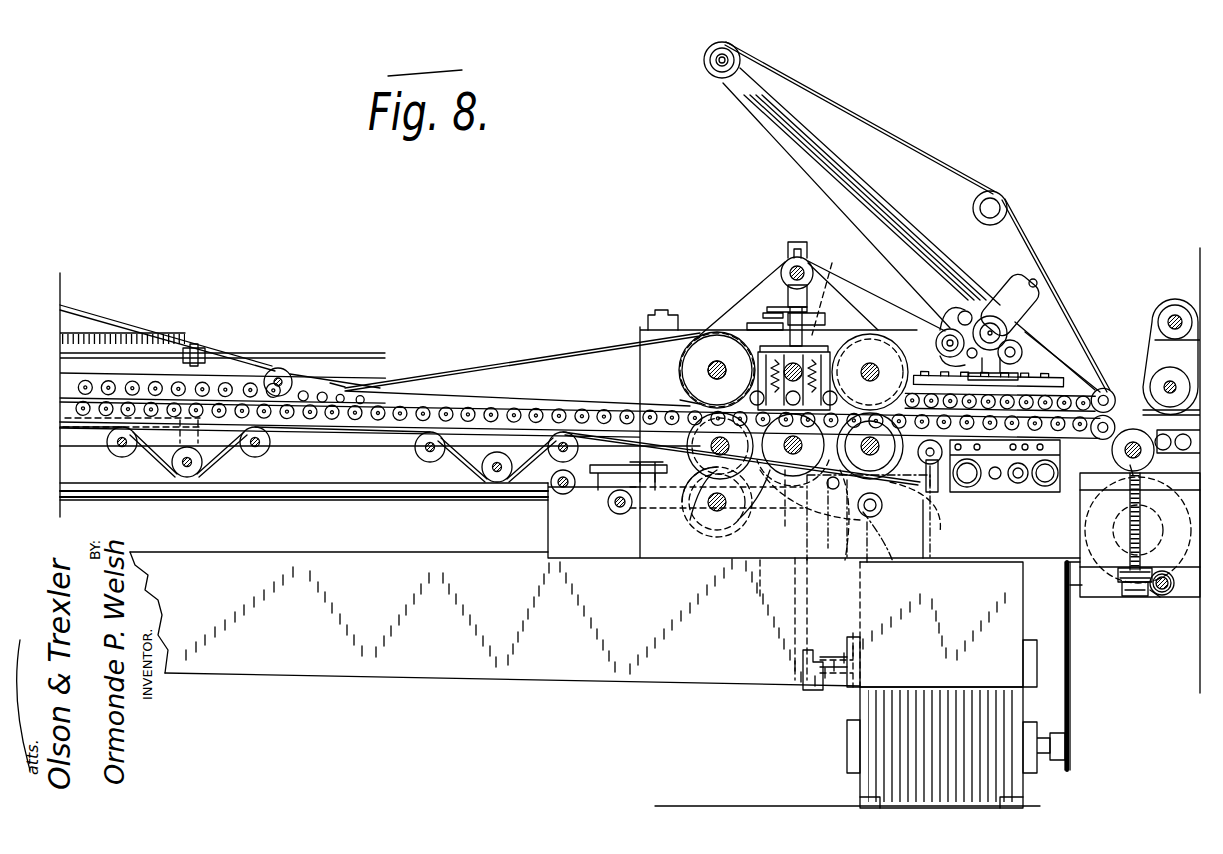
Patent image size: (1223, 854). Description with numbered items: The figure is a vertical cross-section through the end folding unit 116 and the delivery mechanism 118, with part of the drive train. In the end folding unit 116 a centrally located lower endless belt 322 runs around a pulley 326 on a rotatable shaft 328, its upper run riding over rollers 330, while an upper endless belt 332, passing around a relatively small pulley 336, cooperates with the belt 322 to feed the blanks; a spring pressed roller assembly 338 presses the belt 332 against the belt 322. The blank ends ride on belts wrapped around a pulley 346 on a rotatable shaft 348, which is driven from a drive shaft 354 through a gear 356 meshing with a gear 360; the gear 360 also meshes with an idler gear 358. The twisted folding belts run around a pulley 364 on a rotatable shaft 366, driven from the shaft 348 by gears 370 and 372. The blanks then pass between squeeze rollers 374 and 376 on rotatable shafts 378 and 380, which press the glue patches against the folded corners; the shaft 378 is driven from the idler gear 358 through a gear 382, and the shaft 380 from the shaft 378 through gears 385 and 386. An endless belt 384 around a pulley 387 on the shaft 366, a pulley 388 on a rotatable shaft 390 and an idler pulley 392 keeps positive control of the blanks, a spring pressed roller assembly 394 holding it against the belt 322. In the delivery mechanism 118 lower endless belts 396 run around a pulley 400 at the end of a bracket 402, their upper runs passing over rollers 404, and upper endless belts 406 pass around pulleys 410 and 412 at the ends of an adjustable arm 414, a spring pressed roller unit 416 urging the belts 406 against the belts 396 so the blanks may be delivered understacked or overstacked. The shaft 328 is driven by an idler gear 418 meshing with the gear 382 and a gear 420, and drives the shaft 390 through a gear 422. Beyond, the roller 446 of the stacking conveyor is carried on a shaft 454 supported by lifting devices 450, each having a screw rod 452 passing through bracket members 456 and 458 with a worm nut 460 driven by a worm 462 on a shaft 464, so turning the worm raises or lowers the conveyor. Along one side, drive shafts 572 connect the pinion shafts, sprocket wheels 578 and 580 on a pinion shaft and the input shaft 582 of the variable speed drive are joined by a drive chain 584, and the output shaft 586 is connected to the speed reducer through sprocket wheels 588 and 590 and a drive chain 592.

The end folding unit 116 is at (301, 356).
The delivery mechanism 118 is at (1032, 214).
The lower endless belt 322 is at (447, 378).
The pulley 326 is at (927, 525).
The rotatable shaft 328 is at (830, 470).
The rollers 330 is at (397, 416).
The upper endless belt 332 is at (87, 310).
The pulley 336 is at (277, 368).
The spring pressed roller assembly 338 is at (147, 374).
The pulley 346 is at (683, 458).
The rotatable shaft 348 is at (677, 503).
The drive shaft 354 is at (720, 468).
The gear 356 is at (727, 468).
The idler gear 358 is at (785, 455).
The gear 360 is at (697, 515).
The pulley 364 is at (700, 326).
The rotatable shaft 366 is at (705, 366).
The gear 370 is at (697, 399).
The gear 372 is at (704, 368).
The squeeze rollers 374 is at (858, 514).
The squeeze rollers 376 is at (800, 358).
The rotatable shaft 378 is at (793, 455).
The rotatable shaft 380 is at (778, 345).
The gear 382 is at (785, 535).
The endless belt 384 is at (750, 377).
The gear 385 is at (840, 362).
The gear 386 is at (806, 265).
The pulley 387 is at (732, 396).
The pulley 388 is at (903, 490).
The rotatable shaft 390 is at (875, 362).
The idler pulley 392 is at (797, 248).
The spring pressed roller assembly 394 is at (643, 330).
The endless belts 396 is at (1118, 452).
The pulley 400 is at (1118, 437).
The bracket 402 is at (1053, 486).
The rollers 404 is at (1030, 350).
The upper endless belts 406 is at (903, 137).
The pulley 410 is at (1080, 352).
The pulley 412 is at (741, 52).
The adjustable arm 414 is at (876, 202).
The spring pressed roller unit 416 is at (1045, 340).
The idler gear 418 is at (870, 579).
The gear 420 is at (906, 567).
The gear 422 is at (968, 481).
The roller 446 is at (1172, 384).
The lifting devices 450 is at (1152, 600).
The screw rod 452 is at (1158, 521).
The shaft 454 is at (1130, 470).
The bracket member 456 is at (1140, 530).
The bracket member 458 is at (1160, 598).
The worm nut 460 is at (1132, 596).
The worm 462 is at (1165, 597).
The shaft 464 is at (1172, 591).
The shafts 572 is at (318, 497).
The sprocket wheel 578 is at (803, 567).
The sprocket wheel 580 is at (808, 686).
The input shaft 582 is at (858, 640).
The drive chain 584 is at (809, 574).
The output shaft 586 is at (1040, 760).
The sprocket wheel 588 is at (1068, 744).
The sprocket wheel 590 is at (1075, 590).
The drive chain 592 is at (1072, 654).